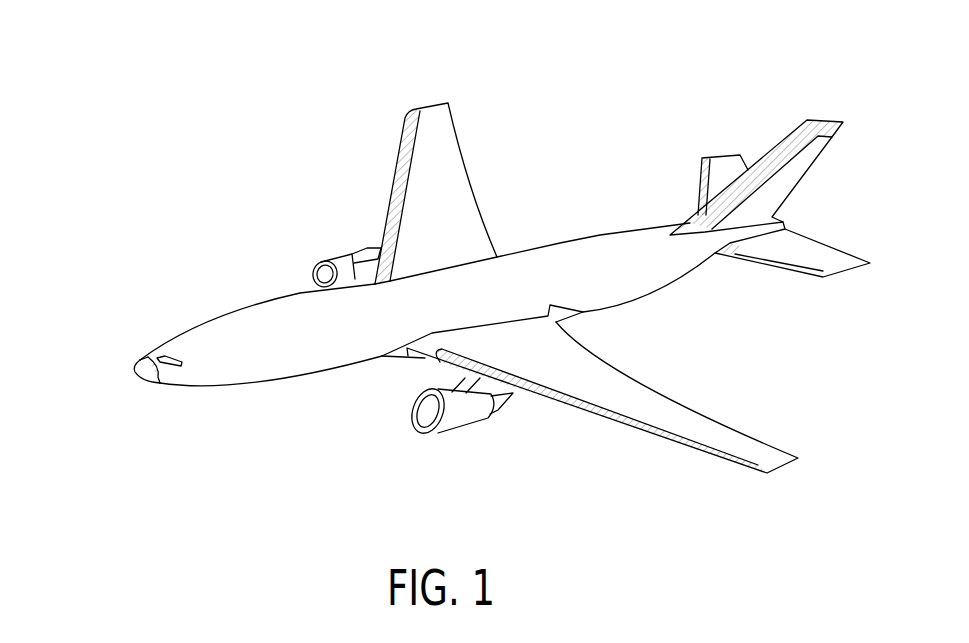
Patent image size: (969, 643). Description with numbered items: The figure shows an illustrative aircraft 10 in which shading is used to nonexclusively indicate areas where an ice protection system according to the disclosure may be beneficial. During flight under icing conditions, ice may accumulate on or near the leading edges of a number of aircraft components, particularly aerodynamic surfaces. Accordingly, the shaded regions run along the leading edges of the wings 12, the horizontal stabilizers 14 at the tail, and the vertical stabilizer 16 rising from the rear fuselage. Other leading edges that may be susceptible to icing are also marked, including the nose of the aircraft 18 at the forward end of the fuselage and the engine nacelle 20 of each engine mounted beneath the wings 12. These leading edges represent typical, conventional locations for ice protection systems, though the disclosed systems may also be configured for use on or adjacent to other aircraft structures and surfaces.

The aircraft 10 is at (258, 164).
The wings 12 is at (467, 178).
The horizontal stabilizers 14 is at (700, 185).
The vertical stabilizer 16 is at (792, 128).
The nose of the aircraft 18 is at (133, 372).
The engine nacelle 20 is at (303, 282).